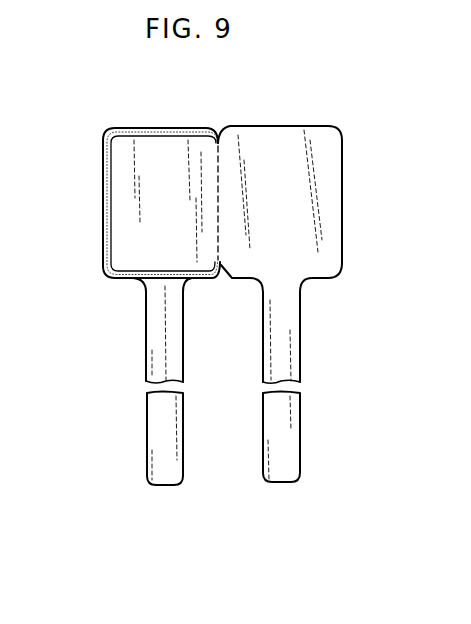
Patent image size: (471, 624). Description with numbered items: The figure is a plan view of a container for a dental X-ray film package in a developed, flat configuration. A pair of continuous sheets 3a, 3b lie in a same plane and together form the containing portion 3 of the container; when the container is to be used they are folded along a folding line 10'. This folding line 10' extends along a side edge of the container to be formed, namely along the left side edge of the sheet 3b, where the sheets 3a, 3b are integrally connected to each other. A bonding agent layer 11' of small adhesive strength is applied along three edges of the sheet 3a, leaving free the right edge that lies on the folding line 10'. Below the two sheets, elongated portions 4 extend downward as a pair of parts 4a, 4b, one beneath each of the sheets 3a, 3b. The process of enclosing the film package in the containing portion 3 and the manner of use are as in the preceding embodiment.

The containing portion 3 is at (227, 226).
The sheet 3a is at (136, 176).
The sheet 3b is at (333, 238).
The lead 4 is at (227, 381).
The left lead 4a is at (155, 437).
The right lead 4b is at (290, 438).
The folding line 10' is at (230, 241).
The bonding agent layer 11' is at (150, 173).